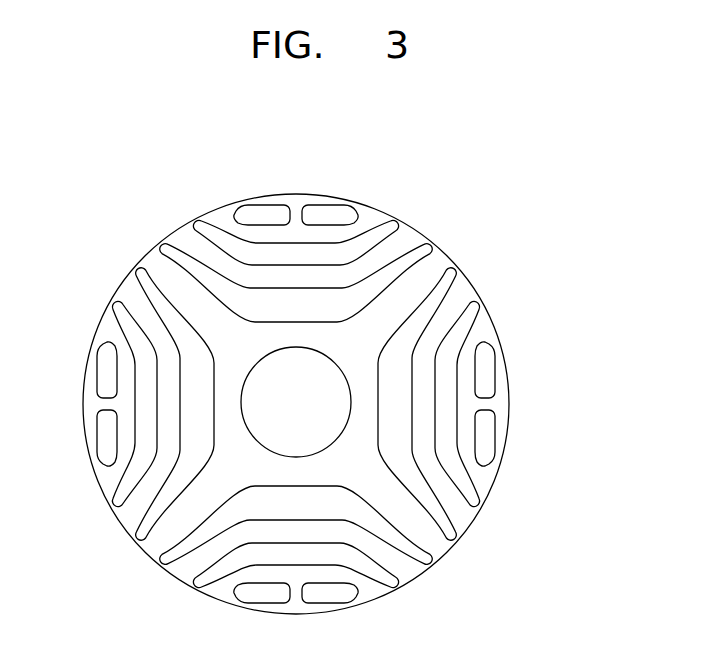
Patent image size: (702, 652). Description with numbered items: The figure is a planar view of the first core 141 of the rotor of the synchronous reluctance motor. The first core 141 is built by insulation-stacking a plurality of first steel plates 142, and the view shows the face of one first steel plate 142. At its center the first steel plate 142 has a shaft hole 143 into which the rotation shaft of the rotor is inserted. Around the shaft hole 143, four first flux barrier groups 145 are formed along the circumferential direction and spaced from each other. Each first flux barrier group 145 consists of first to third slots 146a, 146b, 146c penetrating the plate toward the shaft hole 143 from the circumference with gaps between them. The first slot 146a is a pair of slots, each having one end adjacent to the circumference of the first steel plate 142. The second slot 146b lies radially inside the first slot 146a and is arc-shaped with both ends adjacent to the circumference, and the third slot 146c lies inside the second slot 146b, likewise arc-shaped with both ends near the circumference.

The first core 141 is at (118, 261).
The first steel plate 142 is at (427, 272).
The shaft hole 143 is at (351, 397).
The first flux barrier group 145 is at (516, 180).
The first slot 146a is at (357, 205).
The second slot 146b is at (394, 222).
The third slot 146c is at (429, 246).